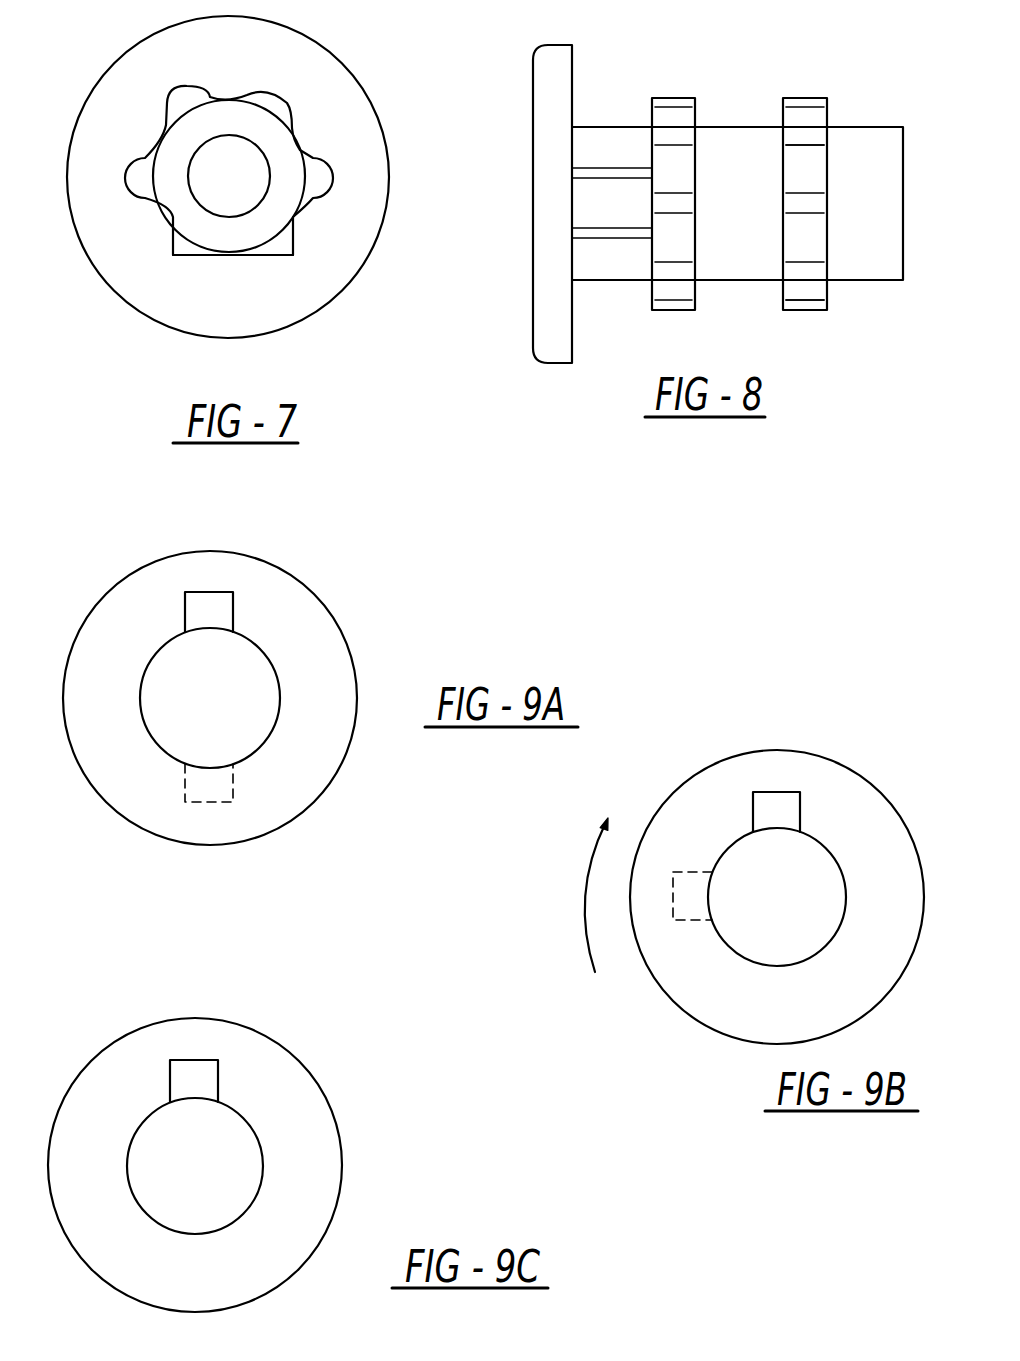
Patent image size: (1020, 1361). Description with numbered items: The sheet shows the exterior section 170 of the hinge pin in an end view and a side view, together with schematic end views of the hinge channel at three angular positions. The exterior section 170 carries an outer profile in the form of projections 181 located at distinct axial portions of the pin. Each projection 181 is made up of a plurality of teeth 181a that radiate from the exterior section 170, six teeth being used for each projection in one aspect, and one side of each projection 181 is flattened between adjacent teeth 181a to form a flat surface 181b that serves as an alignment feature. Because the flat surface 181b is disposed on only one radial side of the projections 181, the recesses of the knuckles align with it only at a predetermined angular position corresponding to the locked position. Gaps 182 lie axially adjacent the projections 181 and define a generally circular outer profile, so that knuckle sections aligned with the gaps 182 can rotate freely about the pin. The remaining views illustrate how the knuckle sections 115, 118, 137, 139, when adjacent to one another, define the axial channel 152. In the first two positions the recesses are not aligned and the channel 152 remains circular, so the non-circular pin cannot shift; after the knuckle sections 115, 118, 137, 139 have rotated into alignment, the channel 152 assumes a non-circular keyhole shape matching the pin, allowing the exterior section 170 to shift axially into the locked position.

In FIG. 7, the exterior section 170 is at (243, 178).
In FIG. 8, the exterior section 170 is at (694, 228).
In FIG. 7, the projections 181 is at (231, 195).
In FIG. 8, the projections 181 is at (797, 210).
In FIG. 7, the teeth 181a is at (138, 187).
In FIG. 8, the teeth 181a is at (810, 293).
In FIG. 7, the flat surface 181b is at (263, 257).
In FIG. 8, the flat surface 181b is at (810, 183).
In FIG. 7, the gaps 182 is at (268, 110).
In FIG. 8, the gaps 182 is at (738, 240).
In FIG. 9A, the axial channel 152 is at (235, 708).
In FIG. 9B, the axial channel 152 is at (777, 897).
In FIG. 9C, the axial channel 152 is at (222, 1177).
In FIG. 9A, the knuckle section 115 is at (358, 698).
In FIG. 9B, the knuckle section 115 is at (651, 897).
In FIG. 9C, the knuckle section 115 is at (335, 1165).
In FIG. 9A, the knuckle section 118 is at (358, 698).
In FIG. 9B, the knuckle section 118 is at (651, 897).
In FIG. 9C, the knuckle section 118 is at (335, 1165).
In FIG. 9A, the knuckle section 137 is at (358, 698).
In FIG. 9B, the knuckle section 137 is at (651, 897).
In FIG. 9C, the knuckle section 137 is at (335, 1165).
In FIG. 9A, the knuckle section 139 is at (358, 698).
In FIG. 9B, the knuckle section 139 is at (651, 897).
In FIG. 9C, the knuckle section 139 is at (335, 1165).